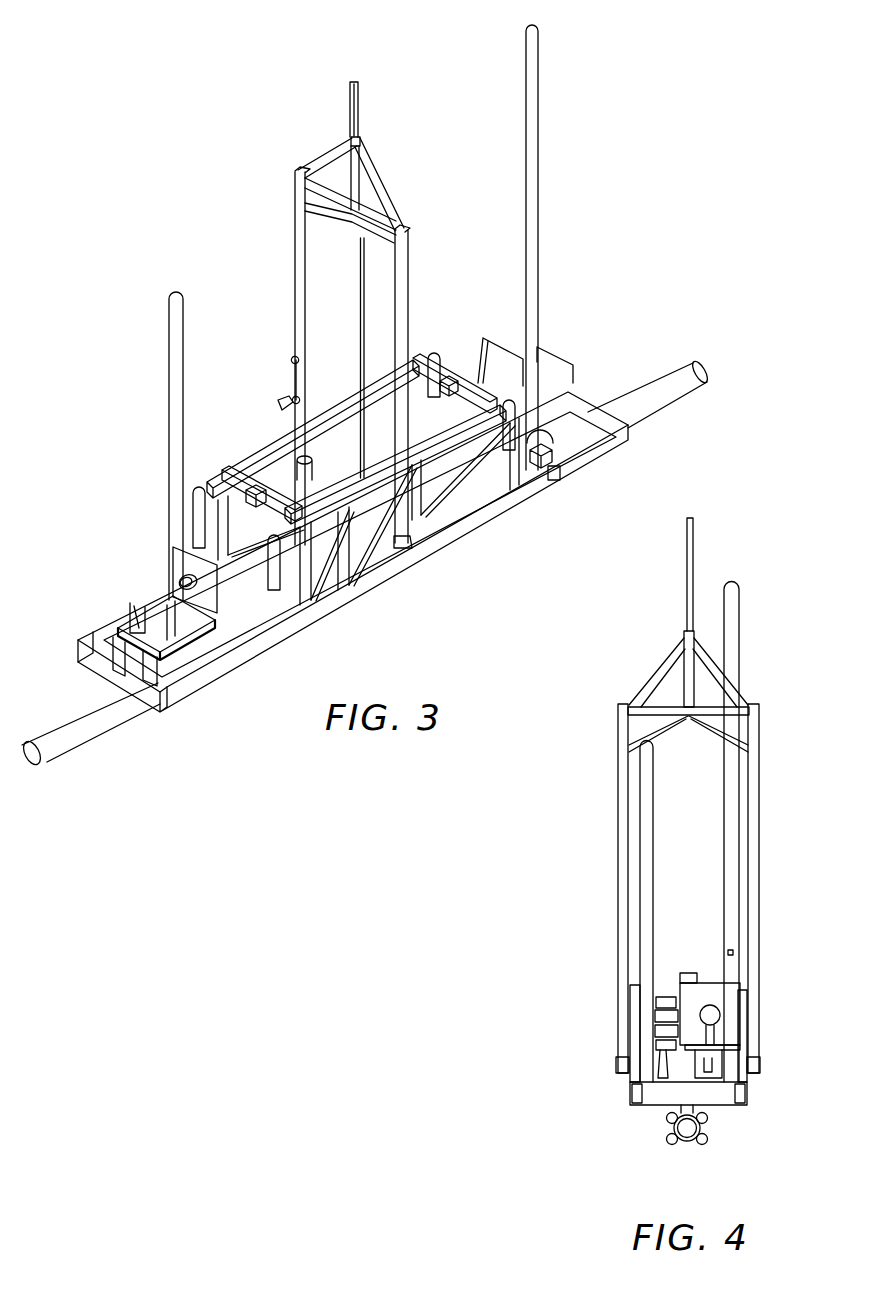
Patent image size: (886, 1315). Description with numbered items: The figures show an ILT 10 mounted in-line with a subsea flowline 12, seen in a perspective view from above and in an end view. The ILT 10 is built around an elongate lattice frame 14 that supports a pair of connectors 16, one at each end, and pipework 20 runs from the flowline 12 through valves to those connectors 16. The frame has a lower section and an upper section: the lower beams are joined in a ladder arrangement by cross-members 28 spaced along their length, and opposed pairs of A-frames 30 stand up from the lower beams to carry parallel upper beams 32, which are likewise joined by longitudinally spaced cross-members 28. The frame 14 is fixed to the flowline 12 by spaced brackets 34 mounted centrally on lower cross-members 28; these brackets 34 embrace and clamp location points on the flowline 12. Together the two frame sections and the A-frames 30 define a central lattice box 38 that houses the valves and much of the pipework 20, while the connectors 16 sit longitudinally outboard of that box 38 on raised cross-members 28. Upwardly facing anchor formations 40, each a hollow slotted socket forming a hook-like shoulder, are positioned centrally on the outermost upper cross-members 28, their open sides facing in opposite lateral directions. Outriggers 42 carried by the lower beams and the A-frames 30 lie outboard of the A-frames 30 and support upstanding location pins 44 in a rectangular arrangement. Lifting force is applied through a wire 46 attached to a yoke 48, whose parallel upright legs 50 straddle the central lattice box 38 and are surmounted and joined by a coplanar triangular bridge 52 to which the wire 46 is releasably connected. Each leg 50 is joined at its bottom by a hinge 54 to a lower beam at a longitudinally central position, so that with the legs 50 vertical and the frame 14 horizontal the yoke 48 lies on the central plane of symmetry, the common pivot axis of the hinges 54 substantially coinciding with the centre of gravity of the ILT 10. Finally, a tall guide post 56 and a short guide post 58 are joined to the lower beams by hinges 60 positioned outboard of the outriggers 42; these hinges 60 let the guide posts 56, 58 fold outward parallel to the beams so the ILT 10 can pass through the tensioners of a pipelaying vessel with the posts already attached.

In FIG. 3, the ILT 10 is at (115, 565).
In FIG. 4, the ILT 10 is at (790, 1038).
In FIG. 3, the subsea flowline 12 is at (97, 730).
In FIG. 4, the subsea flowline 12 is at (687, 1145).
In FIG. 3, the elongate lattice frame 14 is at (377, 507).
In FIG. 4, the elongate lattice frame 14 is at (652, 1109).
In FIG. 3, the connector 16 is at (178, 578).
In FIG. 4, the connector 16 is at (716, 1015).
In FIG. 3, the pipework 20 is at (373, 556).
In FIG. 3, the cross-members 28 is at (98, 643).
In FIG. 4, the cross-members 28 is at (688, 1093).
In FIG. 3, the A-frames 30 is at (221, 482).
In FIG. 3, the upper beams 32 is at (354, 385).
In FIG. 4, the brackets 34 is at (722, 1130).
In FIG. 3, the central lattice box 38 is at (349, 416).
In FIG. 3, the anchor formations 40 is at (250, 485).
In FIG. 4, the anchor formations 40 is at (688, 972).
In FIG. 3, the outriggers 42 is at (281, 618).
In FIG. 3, the location pins 44 is at (431, 352).
In FIG. 4, the location pins 44 is at (632, 998).
In FIG. 3, the wire 46 is at (359, 97).
In FIG. 4, the wire 46 is at (695, 540).
In FIG. 3, the yoke 48 is at (348, 347).
In FIG. 4, the yoke 48 is at (695, 852).
In FIG. 3, the legs 50 is at (294, 252).
In FIG. 4, the legs 50 is at (617, 766).
In FIG. 3, the triangular bridge 52 is at (382, 182).
In FIG. 4, the triangular bridge 52 is at (655, 672).
In FIG. 3, the hinges 54 is at (411, 548).
In FIG. 4, the hinges 54 is at (616, 1063).
In FIG. 3, the tall guide post 56 is at (539, 75).
In FIG. 4, the tall guide post 56 is at (740, 607).
In FIG. 3, the short guide post 58 is at (169, 322).
In FIG. 4, the short guide post 58 is at (654, 826).
In FIG. 3, the hinges 60 is at (552, 480).